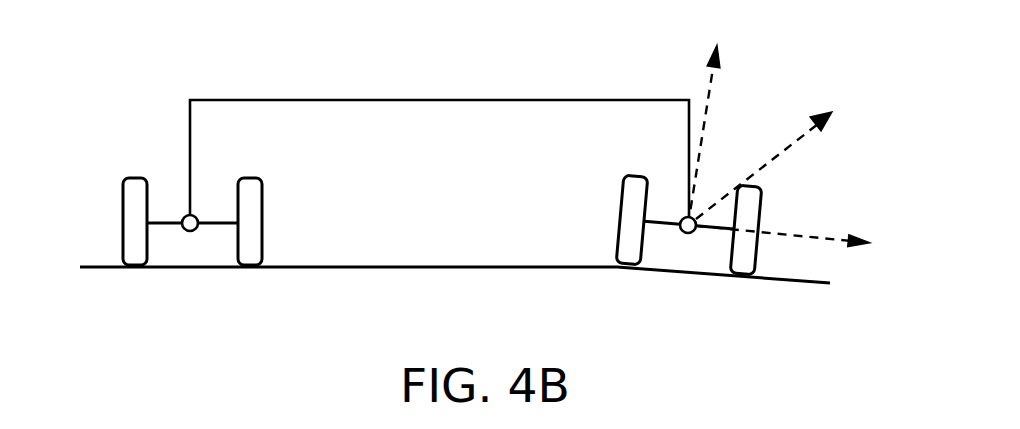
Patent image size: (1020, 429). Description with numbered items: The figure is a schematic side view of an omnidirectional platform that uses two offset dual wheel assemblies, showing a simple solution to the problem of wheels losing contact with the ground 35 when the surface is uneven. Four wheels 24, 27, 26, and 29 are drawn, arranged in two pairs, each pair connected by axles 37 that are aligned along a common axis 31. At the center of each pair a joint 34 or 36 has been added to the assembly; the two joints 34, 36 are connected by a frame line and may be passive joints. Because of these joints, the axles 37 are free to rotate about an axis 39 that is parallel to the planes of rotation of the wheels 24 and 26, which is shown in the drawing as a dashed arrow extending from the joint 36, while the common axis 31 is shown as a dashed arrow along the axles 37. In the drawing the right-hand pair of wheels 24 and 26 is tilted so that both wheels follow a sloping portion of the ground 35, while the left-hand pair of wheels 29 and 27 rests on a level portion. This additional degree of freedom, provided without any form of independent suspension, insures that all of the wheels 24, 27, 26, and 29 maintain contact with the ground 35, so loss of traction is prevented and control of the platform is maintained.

The wheel 24 is at (617, 235).
The wheel 26 is at (760, 208).
The wheel 27 is at (262, 252).
The wheel 29 is at (130, 267).
The common axis 31 is at (848, 238).
The joint 34 is at (188, 231).
The ground 35 is at (395, 267).
The joint 36 is at (690, 235).
The axles 37 is at (166, 220).
The axis 39 is at (798, 136).